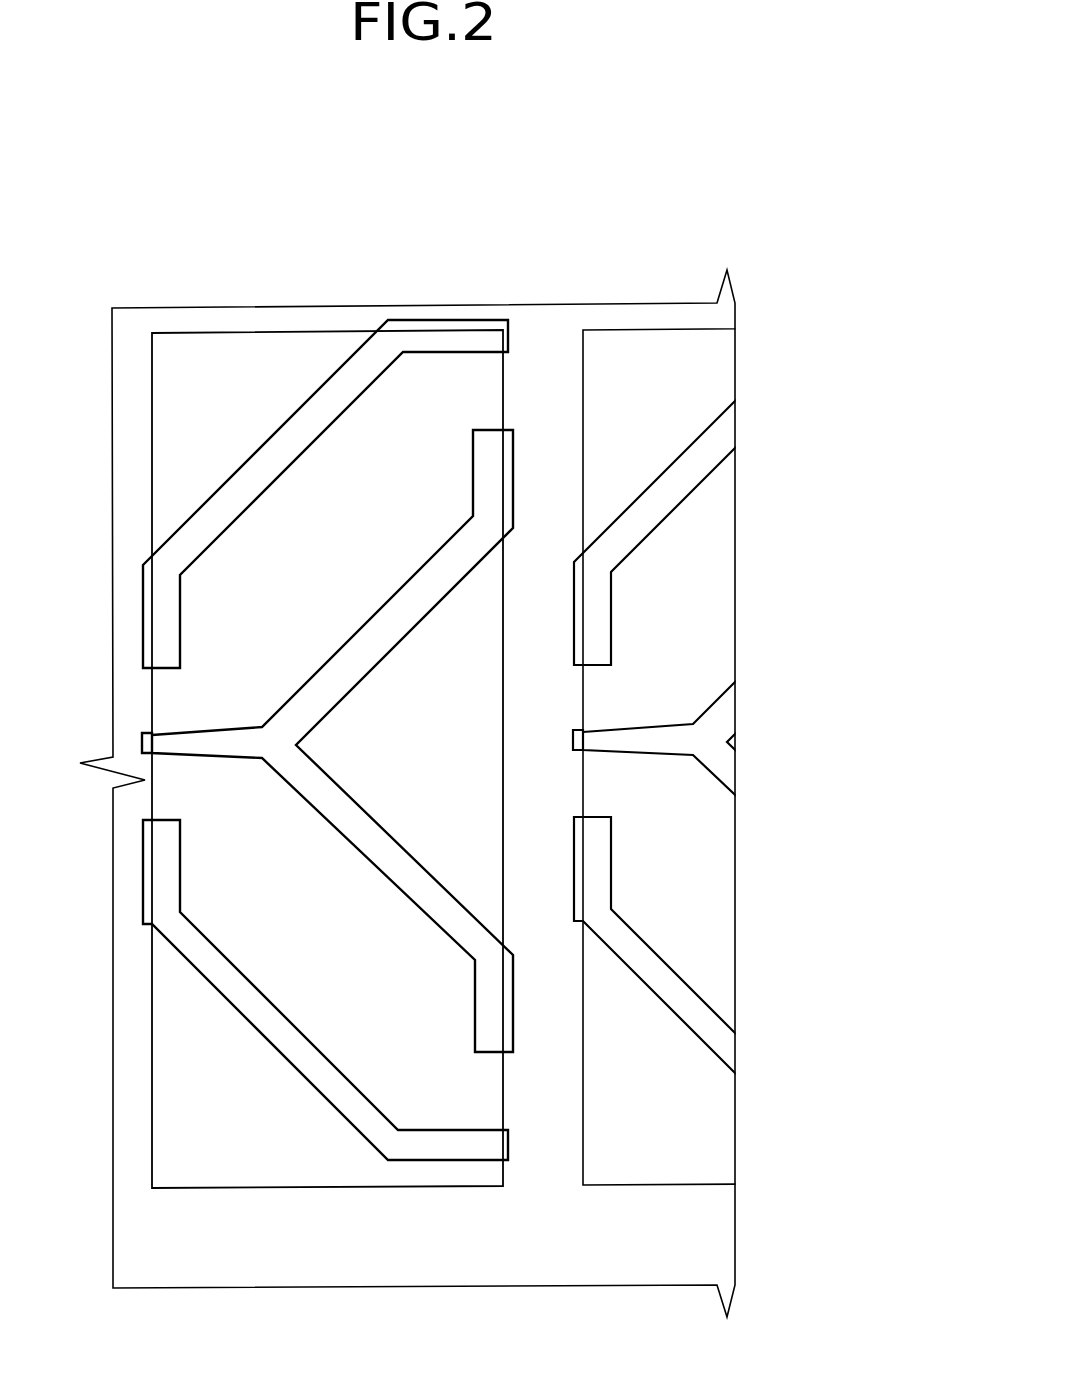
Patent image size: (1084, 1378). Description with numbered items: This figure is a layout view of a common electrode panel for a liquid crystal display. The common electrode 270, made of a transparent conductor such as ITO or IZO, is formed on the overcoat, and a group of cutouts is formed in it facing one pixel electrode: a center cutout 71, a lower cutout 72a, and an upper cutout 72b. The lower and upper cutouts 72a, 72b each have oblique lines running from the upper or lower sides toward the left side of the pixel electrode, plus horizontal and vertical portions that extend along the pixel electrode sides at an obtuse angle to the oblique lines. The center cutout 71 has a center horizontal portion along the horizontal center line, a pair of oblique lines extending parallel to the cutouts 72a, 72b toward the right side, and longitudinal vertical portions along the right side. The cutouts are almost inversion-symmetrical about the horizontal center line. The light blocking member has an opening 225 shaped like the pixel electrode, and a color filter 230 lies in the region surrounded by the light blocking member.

The center cutout 71 is at (320, 832).
The lower cutout 72a is at (314, 1029).
The upper cutout 72b is at (318, 452).
The opening 225 is at (342, 1188).
The color filter 230 is at (237, 1267).
The common electrode 270 is at (460, 1288).